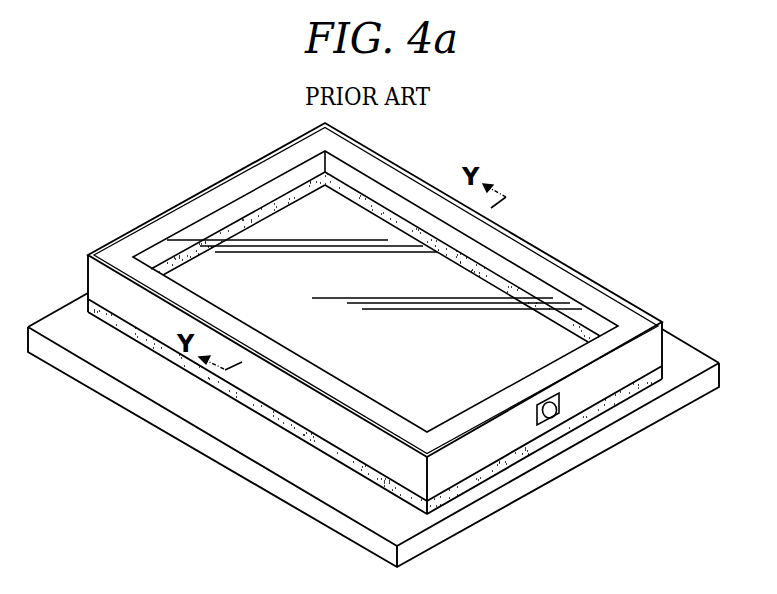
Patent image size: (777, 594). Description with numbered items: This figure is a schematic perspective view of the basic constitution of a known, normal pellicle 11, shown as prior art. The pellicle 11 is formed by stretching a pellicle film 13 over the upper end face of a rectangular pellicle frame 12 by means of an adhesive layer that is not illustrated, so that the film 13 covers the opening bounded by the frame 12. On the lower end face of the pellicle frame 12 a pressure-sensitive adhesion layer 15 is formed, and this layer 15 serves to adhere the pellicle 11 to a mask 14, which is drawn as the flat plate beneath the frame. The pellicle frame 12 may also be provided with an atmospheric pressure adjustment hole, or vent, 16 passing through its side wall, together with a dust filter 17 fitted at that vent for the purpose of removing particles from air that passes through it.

The pellicle 11 is at (105, 213).
The pellicle frame 12 is at (665, 348).
The pellicle film 13 is at (277, 230).
The mask 14 is at (248, 468).
The pressure-sensitive adhesion layer 15 is at (332, 452).
The atmospheric pressure adjustment hole 16 is at (552, 418).
The dust filter 17 is at (560, 402).